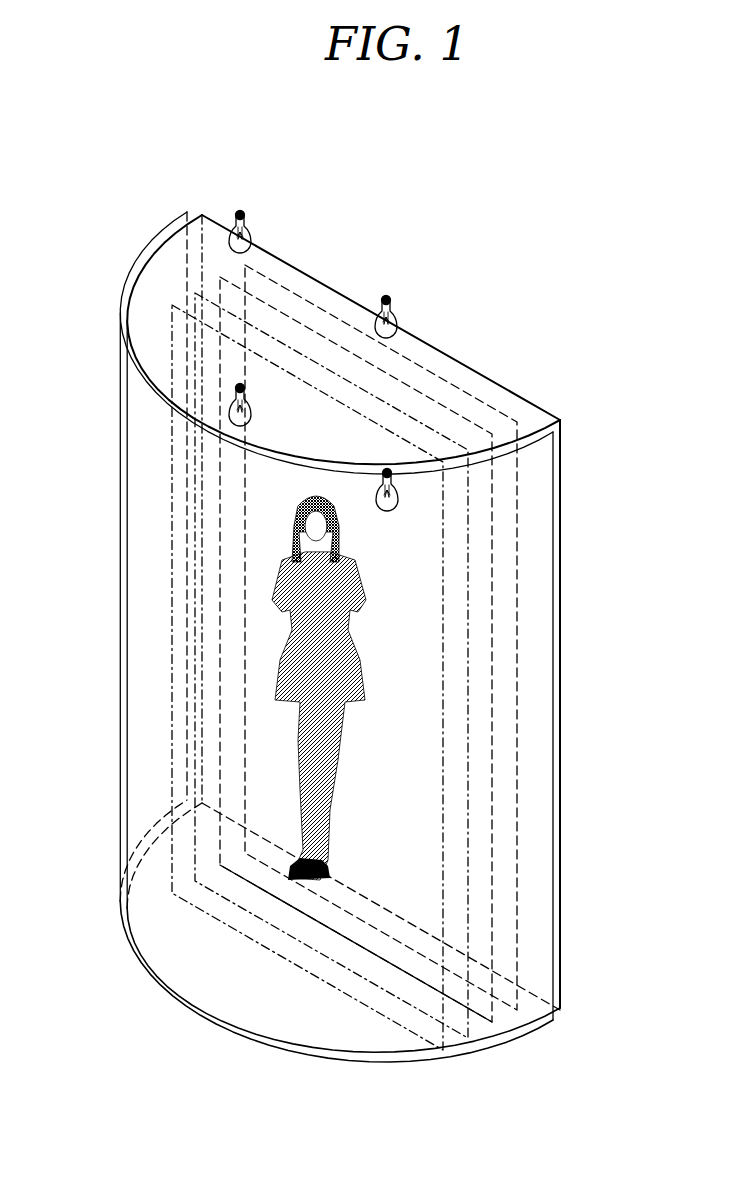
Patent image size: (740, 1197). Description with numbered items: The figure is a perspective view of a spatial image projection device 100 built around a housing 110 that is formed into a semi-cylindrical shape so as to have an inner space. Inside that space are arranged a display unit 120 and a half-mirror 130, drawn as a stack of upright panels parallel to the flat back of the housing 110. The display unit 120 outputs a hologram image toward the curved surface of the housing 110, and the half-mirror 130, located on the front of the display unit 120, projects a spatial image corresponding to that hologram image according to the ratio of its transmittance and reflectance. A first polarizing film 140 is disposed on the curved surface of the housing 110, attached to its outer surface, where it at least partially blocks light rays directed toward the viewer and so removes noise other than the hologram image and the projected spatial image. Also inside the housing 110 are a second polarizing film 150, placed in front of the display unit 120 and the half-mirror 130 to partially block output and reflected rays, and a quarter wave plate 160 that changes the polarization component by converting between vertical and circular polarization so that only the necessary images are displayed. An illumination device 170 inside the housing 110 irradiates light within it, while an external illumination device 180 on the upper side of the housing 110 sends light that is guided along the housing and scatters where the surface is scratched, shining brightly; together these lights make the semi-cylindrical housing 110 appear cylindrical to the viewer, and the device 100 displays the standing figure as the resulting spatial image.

The spatial image projection device 100 is at (553, 161).
The housing 110 is at (563, 533).
The display unit 120 is at (515, 582).
The half-mirror 130 is at (492, 625).
The first polarizing film 140 is at (555, 667).
The second polarizing film 150 is at (468, 722).
The quarter wave plate 160 is at (443, 765).
The illumination device 170 is at (376, 497).
The external illumination device 180 is at (386, 296).